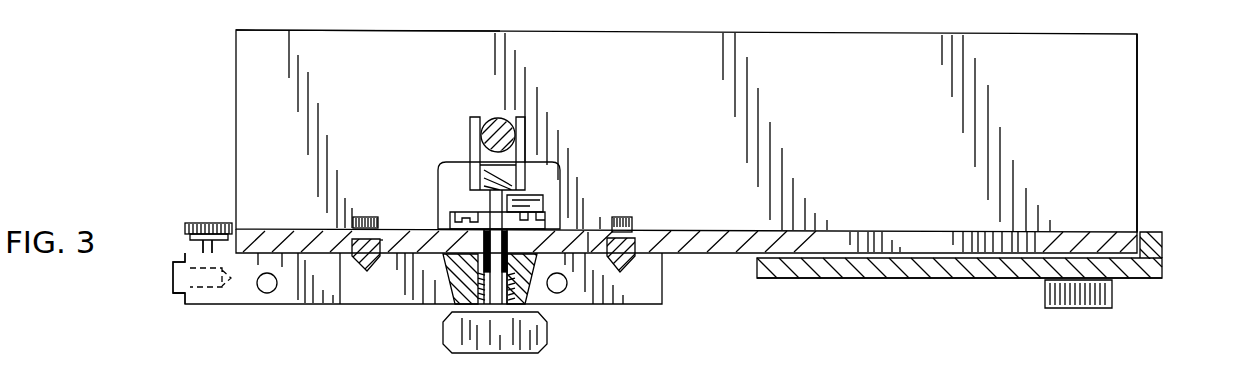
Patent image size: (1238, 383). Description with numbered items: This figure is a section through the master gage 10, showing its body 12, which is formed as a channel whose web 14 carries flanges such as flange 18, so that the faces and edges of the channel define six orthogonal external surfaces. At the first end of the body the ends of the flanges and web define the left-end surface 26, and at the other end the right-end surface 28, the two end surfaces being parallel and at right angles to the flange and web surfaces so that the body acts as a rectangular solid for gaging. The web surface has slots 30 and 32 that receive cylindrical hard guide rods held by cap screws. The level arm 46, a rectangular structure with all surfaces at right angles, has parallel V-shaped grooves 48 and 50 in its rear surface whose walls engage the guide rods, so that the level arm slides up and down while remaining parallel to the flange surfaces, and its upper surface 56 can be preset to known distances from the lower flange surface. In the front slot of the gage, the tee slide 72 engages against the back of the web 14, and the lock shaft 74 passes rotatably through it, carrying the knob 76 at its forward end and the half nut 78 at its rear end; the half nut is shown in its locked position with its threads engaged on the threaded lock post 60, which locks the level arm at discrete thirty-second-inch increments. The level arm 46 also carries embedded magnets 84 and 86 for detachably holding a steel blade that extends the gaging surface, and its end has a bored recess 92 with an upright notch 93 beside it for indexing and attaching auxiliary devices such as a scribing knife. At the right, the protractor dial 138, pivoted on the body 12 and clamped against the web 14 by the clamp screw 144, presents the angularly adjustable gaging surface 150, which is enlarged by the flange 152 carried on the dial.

The master gage 10 is at (1150, 108).
The body 12 is at (1137, 148).
The web 14 is at (712, 254).
The flange 18 is at (263, 27).
The left-end surface 26 is at (234, 117).
The right-end surface 28 is at (1137, 70).
The slot 30 is at (385, 240).
The slot 32 is at (638, 248).
The level arm 46 is at (231, 304).
The V-shaped groove 48 is at (350, 260).
The V-shaped groove 50 is at (608, 263).
The upper surface 56 is at (363, 283).
The lock post 60 is at (499, 118).
The tee slide 72 is at (480, 213).
The lock shaft 74 is at (471, 192).
The knob 76 is at (544, 347).
The half nut 78 is at (471, 133).
The magnet 84 is at (259, 291).
The magnet 86 is at (563, 292).
The bored recess 92 is at (175, 270).
The notch 93 is at (177, 297).
The protractor dial 138 is at (1138, 280).
The clamp screw 144 is at (1063, 309).
The gaging surface 150 is at (1163, 262).
The flange 152 is at (1147, 231).